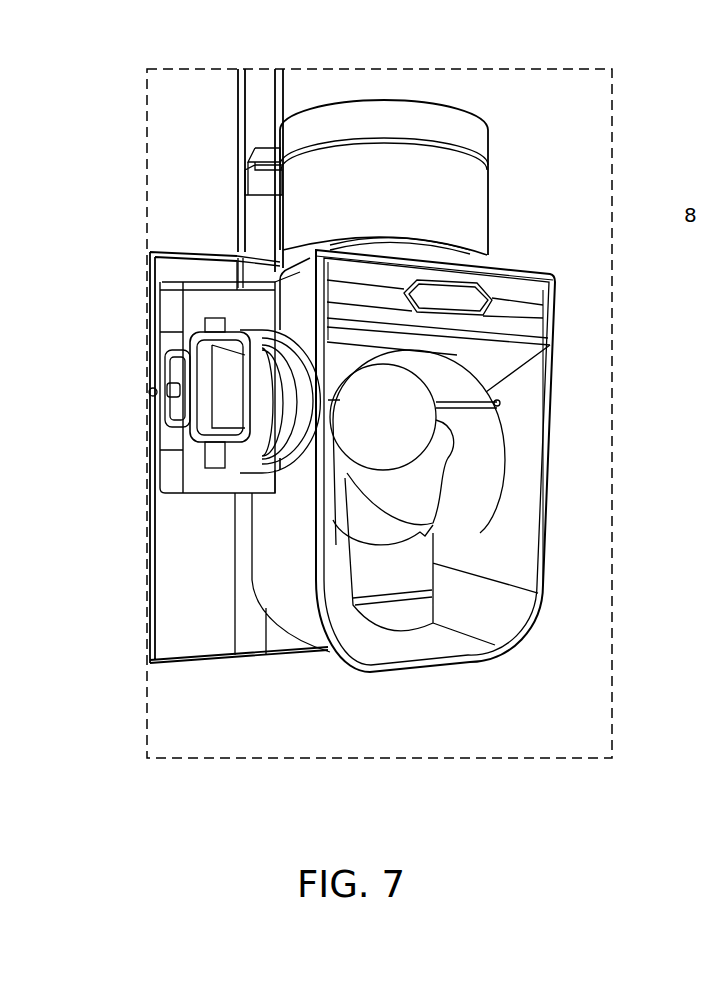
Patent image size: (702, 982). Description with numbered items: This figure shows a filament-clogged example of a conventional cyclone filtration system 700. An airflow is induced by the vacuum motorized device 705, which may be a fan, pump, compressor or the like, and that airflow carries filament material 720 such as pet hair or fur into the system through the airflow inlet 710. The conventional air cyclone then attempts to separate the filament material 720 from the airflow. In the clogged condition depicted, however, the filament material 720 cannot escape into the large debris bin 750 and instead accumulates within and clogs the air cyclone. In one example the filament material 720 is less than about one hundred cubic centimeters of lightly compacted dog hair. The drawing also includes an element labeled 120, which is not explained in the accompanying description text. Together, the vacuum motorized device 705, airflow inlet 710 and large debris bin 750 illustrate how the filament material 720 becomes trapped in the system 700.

The conventional cyclone filtration system 700 is at (168, 60).
The support pole 120 is at (340, 298).
The vacuum motorized device 705 is at (427, 205).
The airflow inlet 710 is at (222, 413).
The filament material 720 is at (453, 607).
The large debris bin 750 is at (417, 484).